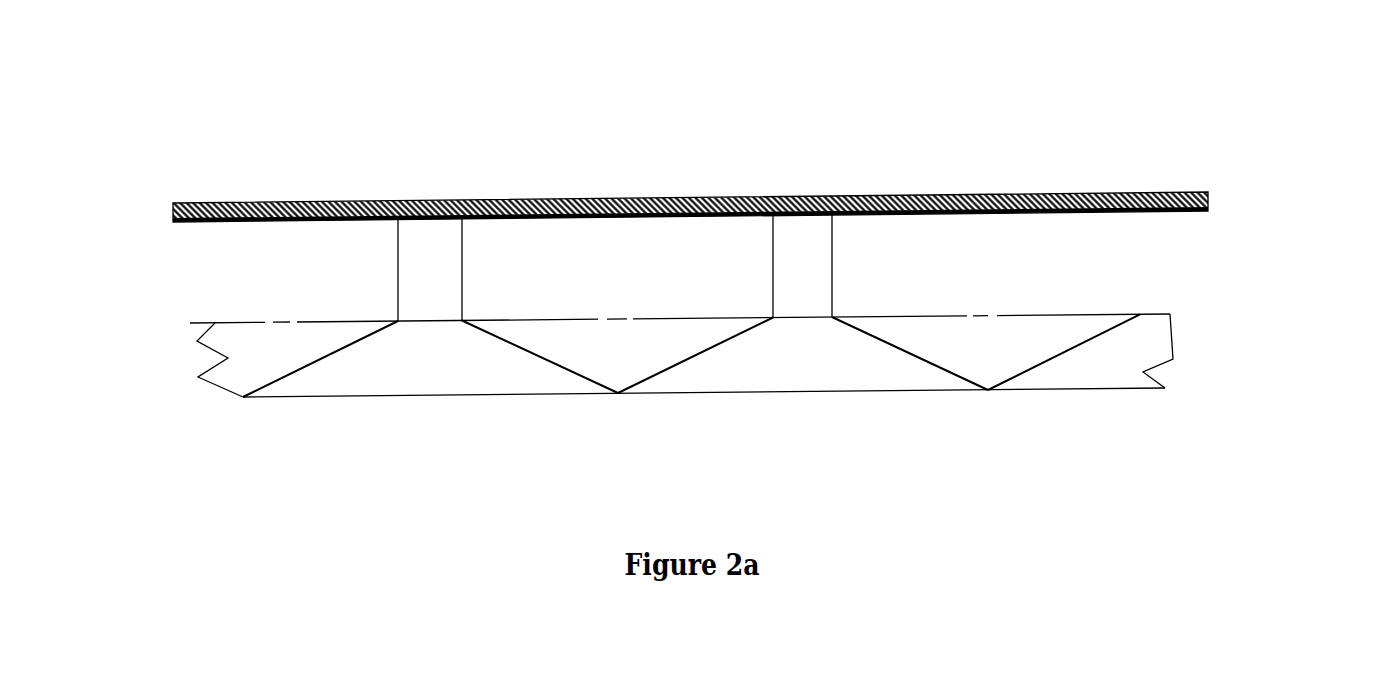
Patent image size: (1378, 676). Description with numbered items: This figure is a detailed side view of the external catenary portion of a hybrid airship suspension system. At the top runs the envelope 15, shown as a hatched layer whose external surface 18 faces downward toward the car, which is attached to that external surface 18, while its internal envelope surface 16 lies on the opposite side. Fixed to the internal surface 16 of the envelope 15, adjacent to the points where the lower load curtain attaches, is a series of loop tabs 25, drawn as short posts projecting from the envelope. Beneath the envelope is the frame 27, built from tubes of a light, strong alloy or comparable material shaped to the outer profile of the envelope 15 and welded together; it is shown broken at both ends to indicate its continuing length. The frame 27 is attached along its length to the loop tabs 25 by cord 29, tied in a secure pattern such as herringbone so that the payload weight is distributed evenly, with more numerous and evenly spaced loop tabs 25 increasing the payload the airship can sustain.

The envelope 15 is at (638, 203).
The internal envelope surface 16 is at (337, 202).
The external surface 18 is at (212, 223).
The loop tabs 25 is at (423, 237).
The frame 27 is at (1173, 335).
The cord 29 is at (320, 362).